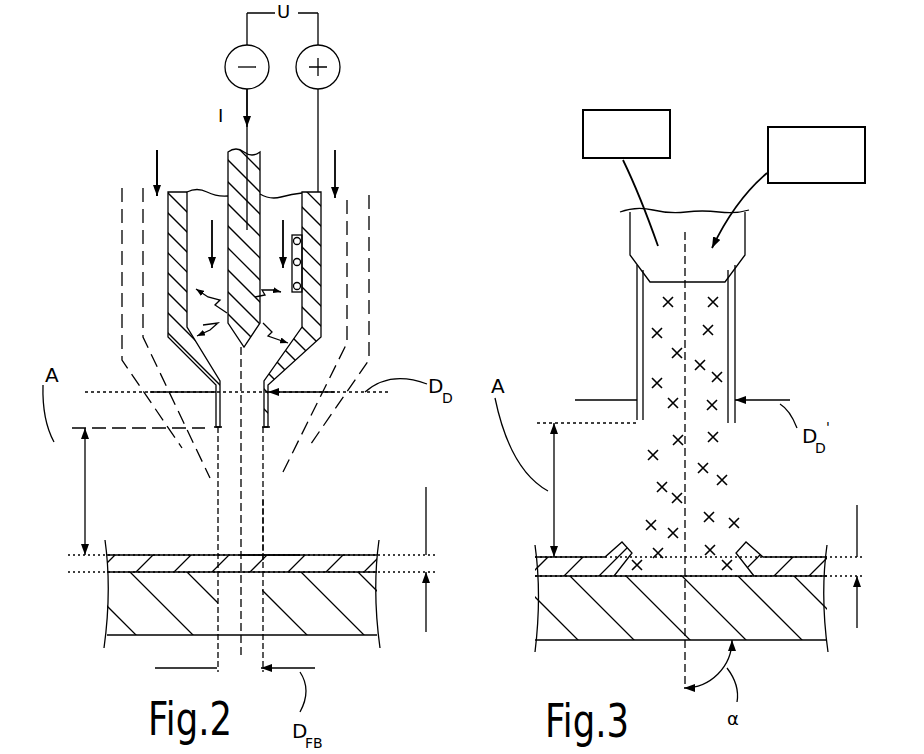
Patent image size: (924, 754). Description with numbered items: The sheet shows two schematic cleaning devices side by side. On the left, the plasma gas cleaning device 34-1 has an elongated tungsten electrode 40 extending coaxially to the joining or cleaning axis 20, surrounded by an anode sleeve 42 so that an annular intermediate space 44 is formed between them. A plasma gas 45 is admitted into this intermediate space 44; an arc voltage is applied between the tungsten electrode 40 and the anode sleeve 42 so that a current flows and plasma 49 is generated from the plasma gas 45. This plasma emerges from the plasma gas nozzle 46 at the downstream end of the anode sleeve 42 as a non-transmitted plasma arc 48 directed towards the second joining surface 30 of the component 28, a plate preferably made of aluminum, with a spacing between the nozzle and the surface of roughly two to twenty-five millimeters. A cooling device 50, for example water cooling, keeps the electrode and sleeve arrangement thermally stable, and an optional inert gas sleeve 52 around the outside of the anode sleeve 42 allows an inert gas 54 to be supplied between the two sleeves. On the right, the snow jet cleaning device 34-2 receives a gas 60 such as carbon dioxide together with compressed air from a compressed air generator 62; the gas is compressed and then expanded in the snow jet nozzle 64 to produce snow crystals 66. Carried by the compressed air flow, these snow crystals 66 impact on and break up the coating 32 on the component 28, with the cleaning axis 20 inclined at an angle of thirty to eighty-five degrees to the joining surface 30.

In FIG. 2, the joining axis 20 is at (245, 513).
In FIG. 3, the joining axis 20 is at (687, 491).
In FIG. 2, the component 28 is at (132, 600).
In FIG. 3, the component 28 is at (560, 602).
In FIG. 2, the second joining surface 30 is at (273, 553).
In FIG. 3, the second joining surface 30 is at (731, 539).
In FIG. 2, the coating 32 is at (148, 562).
In FIG. 3, the coating 32 is at (542, 556).
In FIG. 2, the plasma gas cleaning device 34-1 is at (295, 286).
In FIG. 3, the snow jet cleaning device 34-2 is at (679, 224).
In FIG. 2, the tungsten electrode 40 is at (232, 187).
In FIG. 2, the anode sleeve 42 is at (172, 266).
In FIG. 2, the intermediate space 44 is at (300, 328).
In FIG. 2, the plasma gas 45 is at (272, 214).
In FIG. 2, the plasma gas nozzle 46 is at (268, 409).
In FIG. 2, the plasma arc 48 is at (227, 502).
In FIG. 2, the plasma 49 is at (266, 523).
In FIG. 2, the cooling device 50 is at (303, 257).
In FIG. 2, the inert gas sleeve 52 is at (121, 287).
In FIG. 2, the inert gas 54 is at (335, 172).
In FIG. 3, the gas 60 is at (598, 135).
In FIG. 3, the compressed air generator 62 is at (827, 160).
In FIG. 3, the snow jet nozzle 64 is at (746, 272).
In FIG. 3, the snow crystals 66 is at (707, 332).